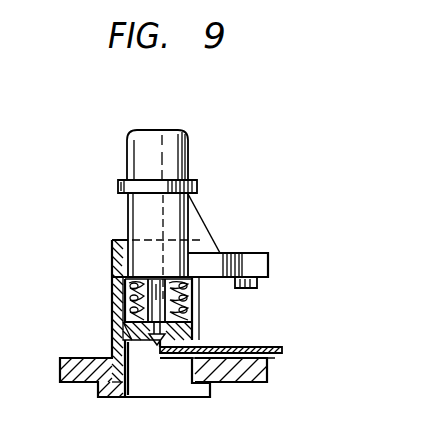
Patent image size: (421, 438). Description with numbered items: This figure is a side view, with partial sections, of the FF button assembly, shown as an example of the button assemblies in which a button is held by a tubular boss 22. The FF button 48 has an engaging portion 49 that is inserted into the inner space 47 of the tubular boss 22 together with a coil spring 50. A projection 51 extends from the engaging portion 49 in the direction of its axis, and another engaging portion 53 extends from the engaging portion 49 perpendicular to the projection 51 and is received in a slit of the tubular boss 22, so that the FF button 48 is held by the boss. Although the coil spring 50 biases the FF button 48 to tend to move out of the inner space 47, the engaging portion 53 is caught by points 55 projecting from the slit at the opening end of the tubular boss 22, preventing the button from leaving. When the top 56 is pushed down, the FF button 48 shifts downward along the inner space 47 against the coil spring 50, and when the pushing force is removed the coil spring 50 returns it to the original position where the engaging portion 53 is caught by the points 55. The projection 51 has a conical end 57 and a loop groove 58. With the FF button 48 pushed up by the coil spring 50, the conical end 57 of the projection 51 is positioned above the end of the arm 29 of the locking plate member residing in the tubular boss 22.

The tubular boss 22 is at (112, 333).
The arm 29 is at (268, 346).
The inner space 47 is at (122, 285).
The FF button 48 is at (189, 165).
The engaging portion 49 is at (133, 216).
The coil spring 50 is at (128, 297).
The projection 51 is at (192, 300).
The engaging portion 53 is at (247, 252).
The points 55 is at (203, 243).
The top 56 is at (136, 130).
The conical end 57 is at (150, 342).
The loop groove 58 is at (185, 325).